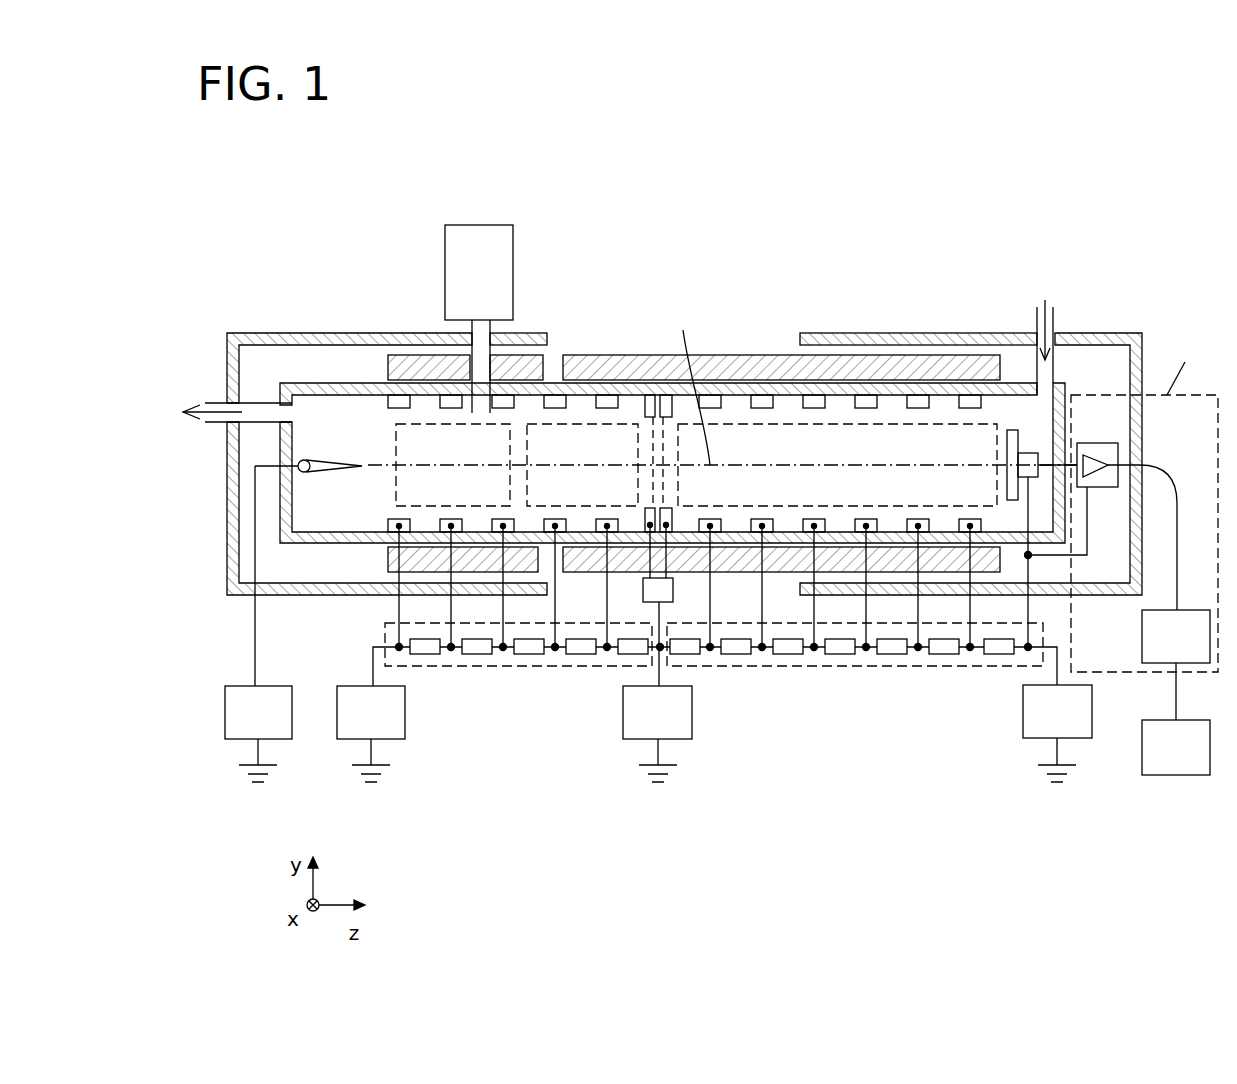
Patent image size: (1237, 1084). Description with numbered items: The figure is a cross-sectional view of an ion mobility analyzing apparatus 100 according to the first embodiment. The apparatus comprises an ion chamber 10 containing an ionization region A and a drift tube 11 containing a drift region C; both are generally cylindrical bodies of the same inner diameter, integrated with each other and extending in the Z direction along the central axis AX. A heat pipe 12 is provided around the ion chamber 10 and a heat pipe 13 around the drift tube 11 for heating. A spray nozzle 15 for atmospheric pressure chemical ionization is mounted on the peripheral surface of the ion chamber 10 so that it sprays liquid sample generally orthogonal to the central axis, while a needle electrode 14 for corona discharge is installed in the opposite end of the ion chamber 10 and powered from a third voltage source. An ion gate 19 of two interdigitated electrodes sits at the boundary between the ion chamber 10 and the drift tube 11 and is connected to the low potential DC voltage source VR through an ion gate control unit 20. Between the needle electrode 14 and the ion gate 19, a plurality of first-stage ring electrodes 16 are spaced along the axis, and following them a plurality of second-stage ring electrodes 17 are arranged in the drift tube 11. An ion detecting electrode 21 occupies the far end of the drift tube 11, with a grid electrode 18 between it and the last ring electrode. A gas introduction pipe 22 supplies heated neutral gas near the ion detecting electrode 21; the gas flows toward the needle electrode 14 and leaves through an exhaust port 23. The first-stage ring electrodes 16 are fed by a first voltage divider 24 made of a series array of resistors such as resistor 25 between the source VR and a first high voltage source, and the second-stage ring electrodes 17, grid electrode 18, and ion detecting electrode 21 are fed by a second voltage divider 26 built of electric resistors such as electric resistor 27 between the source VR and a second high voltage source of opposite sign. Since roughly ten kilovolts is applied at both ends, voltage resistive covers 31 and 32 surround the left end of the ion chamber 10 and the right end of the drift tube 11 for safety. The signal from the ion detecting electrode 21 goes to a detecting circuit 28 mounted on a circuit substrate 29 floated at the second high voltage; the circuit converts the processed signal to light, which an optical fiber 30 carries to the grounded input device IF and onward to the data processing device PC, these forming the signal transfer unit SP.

The ion mobility analyzing apparatus 100 is at (686, 217).
The ion chamber 10 is at (365, 385).
The drift tube 11 is at (717, 384).
The heat pipe 12 is at (430, 356).
The heat pipe 13 is at (868, 354).
The needle electrode 14 is at (315, 460).
The spray nozzle 15 is at (513, 272).
The first-stage ring electrodes 16 is at (397, 517).
The second-stage ring electrodes 17 is at (815, 517).
The grid electrode 18 is at (970, 413).
The ion gate 19 is at (653, 430).
The ion gate control unit 20 is at (673, 590).
The ion detecting electrode 21 is at (1015, 430).
The gas introduction pipe 22 is at (1055, 326).
The exhaust port 23 is at (266, 400).
The first voltage divider 24 is at (483, 667).
The resistor 25 is at (530, 655).
The second voltage divider 26 is at (830, 667).
The electric resistor 27 is at (888, 655).
The detecting circuit 28 is at (1097, 452).
The circuit substrate 29 is at (1098, 487).
The optical fiber 30 is at (1167, 477).
The voltage resistive cover 31 is at (345, 594).
The voltage resistive cover 32 is at (1127, 332).